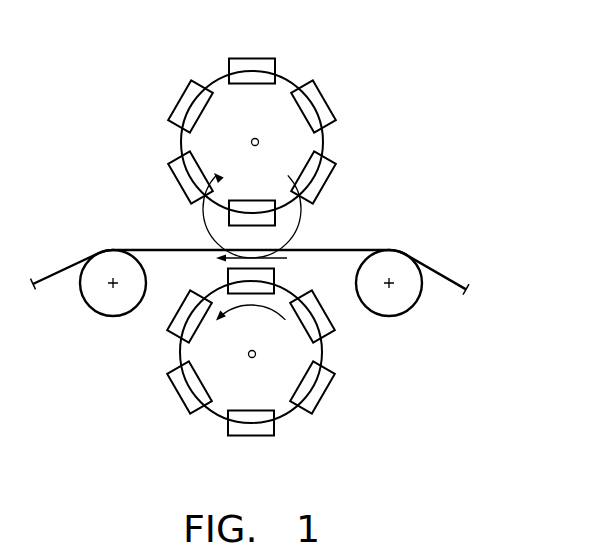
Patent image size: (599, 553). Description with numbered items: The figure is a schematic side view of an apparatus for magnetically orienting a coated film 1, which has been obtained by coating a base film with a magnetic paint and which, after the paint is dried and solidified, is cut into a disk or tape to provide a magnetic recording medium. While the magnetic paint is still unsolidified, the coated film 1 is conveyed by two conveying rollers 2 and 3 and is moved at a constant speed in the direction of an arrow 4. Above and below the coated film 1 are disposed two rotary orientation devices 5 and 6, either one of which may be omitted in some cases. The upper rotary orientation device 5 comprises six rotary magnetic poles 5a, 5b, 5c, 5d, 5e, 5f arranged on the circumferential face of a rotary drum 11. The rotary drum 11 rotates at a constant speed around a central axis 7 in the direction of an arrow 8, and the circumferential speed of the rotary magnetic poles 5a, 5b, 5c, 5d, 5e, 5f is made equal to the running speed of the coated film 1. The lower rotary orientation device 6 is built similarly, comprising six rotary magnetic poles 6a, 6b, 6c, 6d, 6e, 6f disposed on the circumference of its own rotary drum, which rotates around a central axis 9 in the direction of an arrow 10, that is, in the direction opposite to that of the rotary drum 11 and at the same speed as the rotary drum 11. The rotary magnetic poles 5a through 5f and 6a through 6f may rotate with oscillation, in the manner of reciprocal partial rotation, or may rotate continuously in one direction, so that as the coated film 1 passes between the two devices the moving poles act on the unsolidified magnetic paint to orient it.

The coated film 1 is at (441, 274).
The conveying roller 2 is at (93, 300).
The conveying roller 3 is at (408, 300).
The arrow 4 is at (277, 259).
The rotary orientation device 5 is at (255, 129).
The rotary magnetic pole 5a is at (275, 218).
The rotary magnetic pole 5b is at (325, 185).
The rotary magnetic pole 5c is at (325, 100).
The rotary magnetic pole 5d is at (253, 58).
The rotary magnetic pole 5e is at (181, 93).
The rotary magnetic pole 5f is at (178, 182).
The rotary orientation device 6 is at (251, 369).
The rotary magnetic pole 6a is at (228, 280).
The rotary magnetic pole 6b is at (327, 323).
The rotary magnetic pole 6c is at (323, 393).
The rotary magnetic pole 6d is at (243, 434).
The rotary magnetic pole 6e is at (178, 392).
The rotary magnetic pole 6f is at (170, 320).
The central axis 7 is at (251, 142).
The arrow 8 is at (217, 194).
The central axis 9 is at (253, 358).
The arrow 10 is at (274, 317).
The rotary drum 11 is at (283, 88).